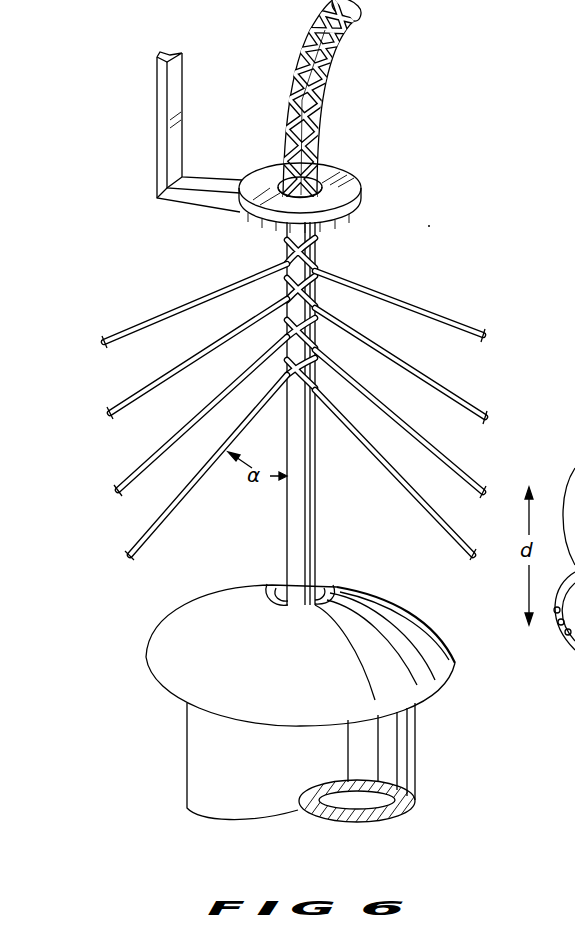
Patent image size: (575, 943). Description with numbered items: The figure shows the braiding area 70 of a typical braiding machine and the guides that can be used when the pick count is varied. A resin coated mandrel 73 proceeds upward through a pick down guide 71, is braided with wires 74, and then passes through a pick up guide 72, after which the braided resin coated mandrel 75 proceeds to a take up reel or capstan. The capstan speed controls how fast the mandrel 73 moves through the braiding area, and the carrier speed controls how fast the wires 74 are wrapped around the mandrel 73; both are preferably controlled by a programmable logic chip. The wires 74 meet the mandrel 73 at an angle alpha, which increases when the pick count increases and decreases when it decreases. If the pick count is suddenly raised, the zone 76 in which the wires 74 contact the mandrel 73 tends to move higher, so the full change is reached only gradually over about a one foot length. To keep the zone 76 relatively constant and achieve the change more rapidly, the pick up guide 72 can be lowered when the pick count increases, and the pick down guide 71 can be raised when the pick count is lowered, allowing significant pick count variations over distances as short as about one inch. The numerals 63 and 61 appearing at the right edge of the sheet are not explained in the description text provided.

The braiding area 70 is at (425, 228).
The pick down guide 71 is at (445, 713).
The pick up guide 72 is at (350, 181).
The resin coated mandrel 73 is at (310, 518).
The wires 74 is at (110, 349).
The braided resin coated mandrel 75 is at (330, 63).
The zone 76 is at (490, 253).
The sphere wall 63 is at (574, 455).
The sphere band with holes 61 is at (553, 638).